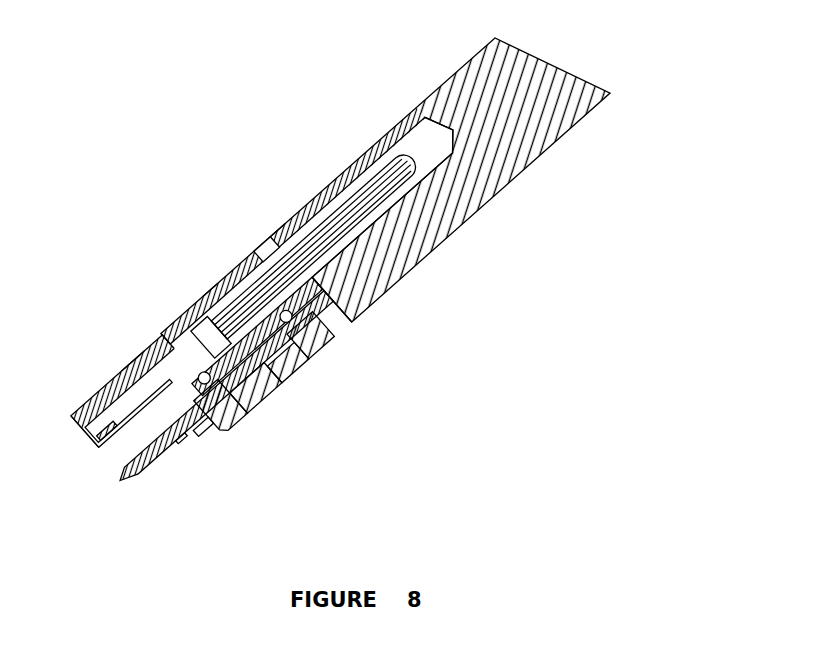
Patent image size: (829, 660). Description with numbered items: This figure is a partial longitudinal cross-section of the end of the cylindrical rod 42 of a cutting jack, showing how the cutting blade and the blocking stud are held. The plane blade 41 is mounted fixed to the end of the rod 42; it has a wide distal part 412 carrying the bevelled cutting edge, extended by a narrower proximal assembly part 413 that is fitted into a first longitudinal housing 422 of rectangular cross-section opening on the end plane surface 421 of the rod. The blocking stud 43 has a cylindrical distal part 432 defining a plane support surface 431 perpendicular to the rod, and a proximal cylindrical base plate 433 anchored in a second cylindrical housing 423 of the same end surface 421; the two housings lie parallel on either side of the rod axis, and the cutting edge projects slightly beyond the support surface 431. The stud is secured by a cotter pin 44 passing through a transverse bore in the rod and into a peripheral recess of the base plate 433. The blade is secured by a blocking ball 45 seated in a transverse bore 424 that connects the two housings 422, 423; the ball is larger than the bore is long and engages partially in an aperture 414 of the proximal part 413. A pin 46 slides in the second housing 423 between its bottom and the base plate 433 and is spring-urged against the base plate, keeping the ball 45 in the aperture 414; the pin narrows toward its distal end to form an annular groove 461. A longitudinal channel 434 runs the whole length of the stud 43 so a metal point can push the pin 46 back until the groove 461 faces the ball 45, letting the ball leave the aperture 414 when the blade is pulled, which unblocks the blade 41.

The plane blade 41 is at (153, 468).
The wide distal part 412 is at (183, 438).
The narrower proximal assembly part 413 is at (267, 393).
The aperture 414 is at (320, 353).
The cylindrical rod 42 is at (530, 153).
The end plane surface 421 is at (207, 428).
The first longitudinal housing 422 is at (303, 368).
The second cylindrical housing 423 is at (414, 141).
The transverse bore 424 is at (320, 280).
The blocking stud 43 is at (97, 381).
The plane support surface 431 is at (71, 428).
The cylindrical distal part 432 is at (132, 353).
The cylindrical base plate 433 is at (157, 337).
The longitudinal channel 434 is at (103, 444).
The cotter pin 44 is at (247, 414).
The blocking ball 45 is at (247, 261).
The pin 46 is at (261, 239).
The annular groove 461 is at (277, 223).